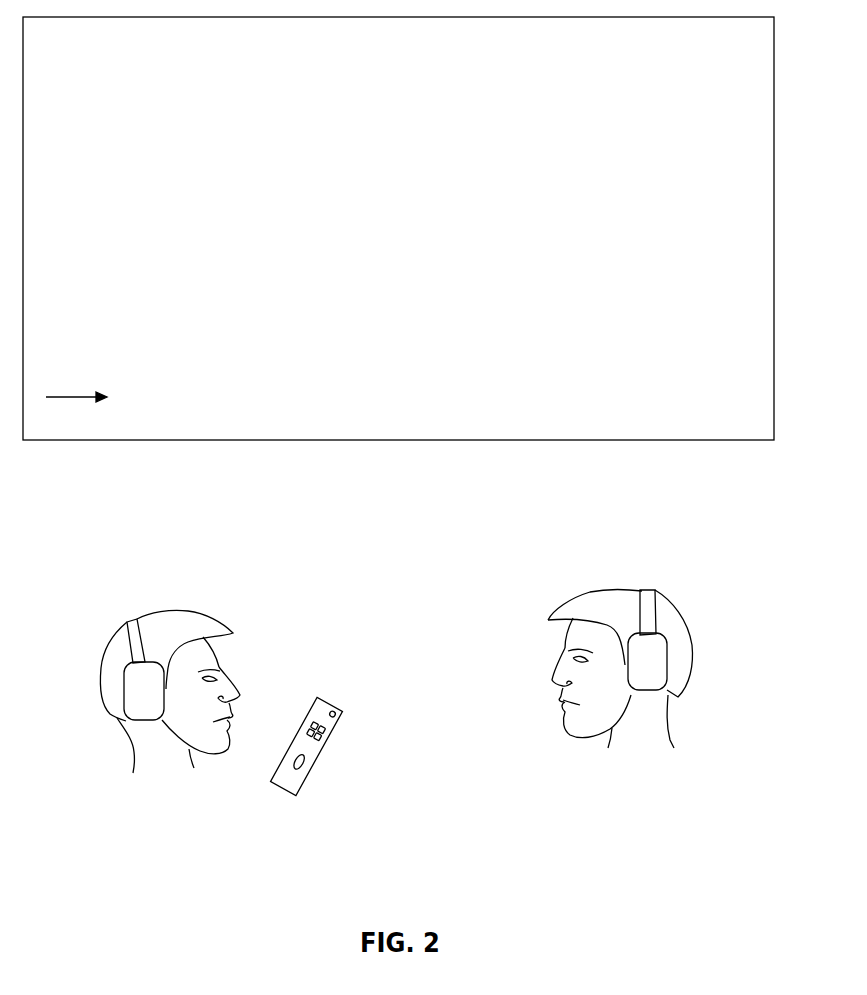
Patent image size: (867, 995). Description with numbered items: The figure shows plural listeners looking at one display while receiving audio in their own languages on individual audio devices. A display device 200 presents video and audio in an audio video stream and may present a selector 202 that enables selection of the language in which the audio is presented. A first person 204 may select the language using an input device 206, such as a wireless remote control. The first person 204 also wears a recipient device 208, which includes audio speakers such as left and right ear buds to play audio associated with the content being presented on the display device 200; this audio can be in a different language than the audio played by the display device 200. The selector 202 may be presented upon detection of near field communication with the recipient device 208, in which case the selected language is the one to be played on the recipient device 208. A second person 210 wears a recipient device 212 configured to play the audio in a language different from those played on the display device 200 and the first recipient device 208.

The display device 200 is at (776, 60).
The selector 202 is at (497, 393).
The first person 204 is at (117, 715).
The input device 206 is at (330, 703).
The recipient device 208 is at (137, 685).
The second person 210 is at (683, 670).
The recipient device 212 is at (650, 645).